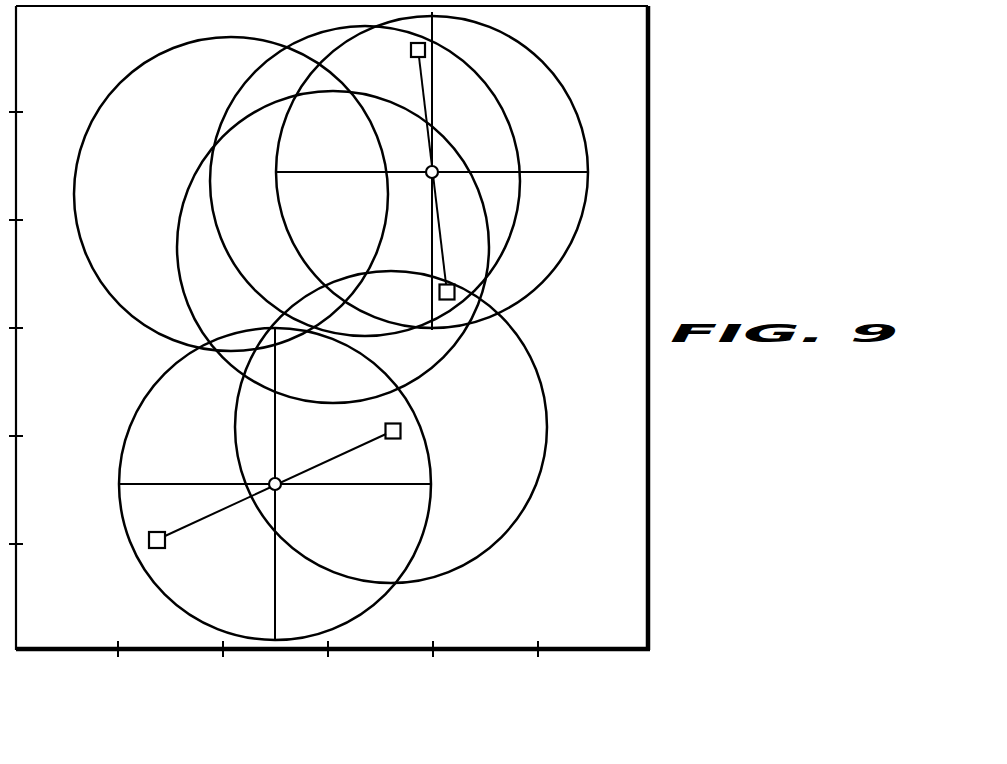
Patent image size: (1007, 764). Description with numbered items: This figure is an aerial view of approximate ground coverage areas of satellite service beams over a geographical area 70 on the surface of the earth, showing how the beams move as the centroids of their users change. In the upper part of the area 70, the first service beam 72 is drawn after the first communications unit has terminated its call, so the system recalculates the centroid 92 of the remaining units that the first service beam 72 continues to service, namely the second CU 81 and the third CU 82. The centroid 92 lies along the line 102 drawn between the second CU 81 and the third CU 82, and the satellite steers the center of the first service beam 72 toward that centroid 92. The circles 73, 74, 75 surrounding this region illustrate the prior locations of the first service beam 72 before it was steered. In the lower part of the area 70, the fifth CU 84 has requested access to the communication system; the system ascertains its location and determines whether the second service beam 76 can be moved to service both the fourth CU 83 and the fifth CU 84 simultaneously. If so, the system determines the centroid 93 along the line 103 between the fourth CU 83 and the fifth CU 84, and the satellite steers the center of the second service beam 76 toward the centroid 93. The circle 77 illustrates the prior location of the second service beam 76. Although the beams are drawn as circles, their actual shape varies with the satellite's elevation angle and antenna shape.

The area 70 is at (650, 473).
The first service beam 72 is at (588, 203).
The circle 73 is at (84, 141).
The circle 74 is at (190, 188).
The circle 75 is at (519, 212).
The second service beam 76 is at (432, 519).
The circle 77 is at (546, 464).
The second CU 81 is at (454, 283).
The third CU 82 is at (409, 50).
The fourth CU 83 is at (392, 439).
The fifth CU 84 is at (160, 549).
The centroid 92 is at (428, 181).
The centroid 93 is at (282, 491).
The line 102 is at (428, 147).
The line 103 is at (221, 515).